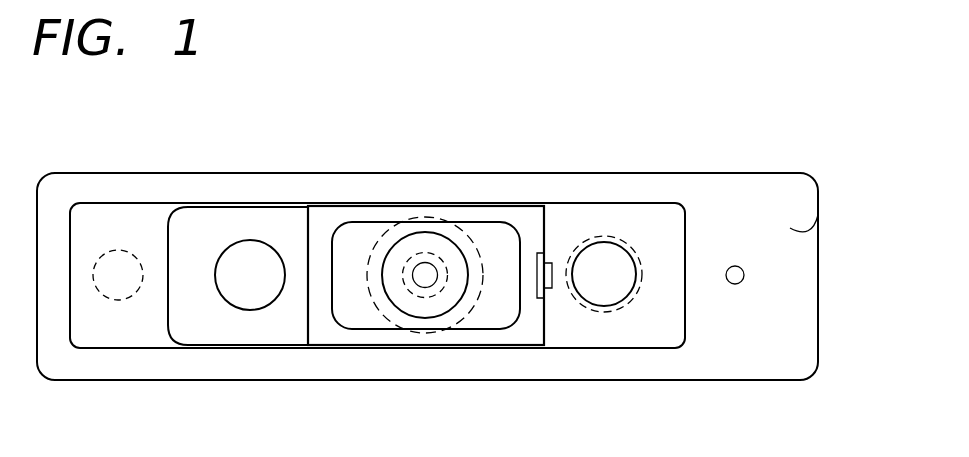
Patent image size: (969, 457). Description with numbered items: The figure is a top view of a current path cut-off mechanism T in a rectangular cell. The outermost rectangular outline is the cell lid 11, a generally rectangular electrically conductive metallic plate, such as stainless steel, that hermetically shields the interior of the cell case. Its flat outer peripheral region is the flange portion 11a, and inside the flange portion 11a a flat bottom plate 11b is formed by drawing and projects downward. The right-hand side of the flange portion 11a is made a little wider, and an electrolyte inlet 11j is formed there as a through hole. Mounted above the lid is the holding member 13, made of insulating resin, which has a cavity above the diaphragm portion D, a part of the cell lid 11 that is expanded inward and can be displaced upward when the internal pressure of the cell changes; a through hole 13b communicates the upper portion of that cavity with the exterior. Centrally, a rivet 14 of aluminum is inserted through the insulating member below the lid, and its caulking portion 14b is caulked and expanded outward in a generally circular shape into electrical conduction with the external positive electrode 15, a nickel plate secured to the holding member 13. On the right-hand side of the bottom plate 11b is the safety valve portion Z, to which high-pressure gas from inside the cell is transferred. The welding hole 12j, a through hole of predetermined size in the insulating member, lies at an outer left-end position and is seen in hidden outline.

The cell lid 11 is at (730, 165).
The flange portion 11a is at (790, 228).
The bottom plate 11b is at (665, 222).
The electrolyte inlet 11j is at (745, 273).
The welding hole 12j is at (118, 285).
The holding member 13 is at (293, 220).
The through hole 13b is at (218, 268).
The rivet 14 is at (418, 243).
The caulking portion 14b is at (450, 243).
The external positive electrode 15 is at (500, 243).
The diaphragm portion D is at (257, 260).
The current path cut-off mechanism T is at (74, 170).
The safety valve portion Z is at (604, 262).